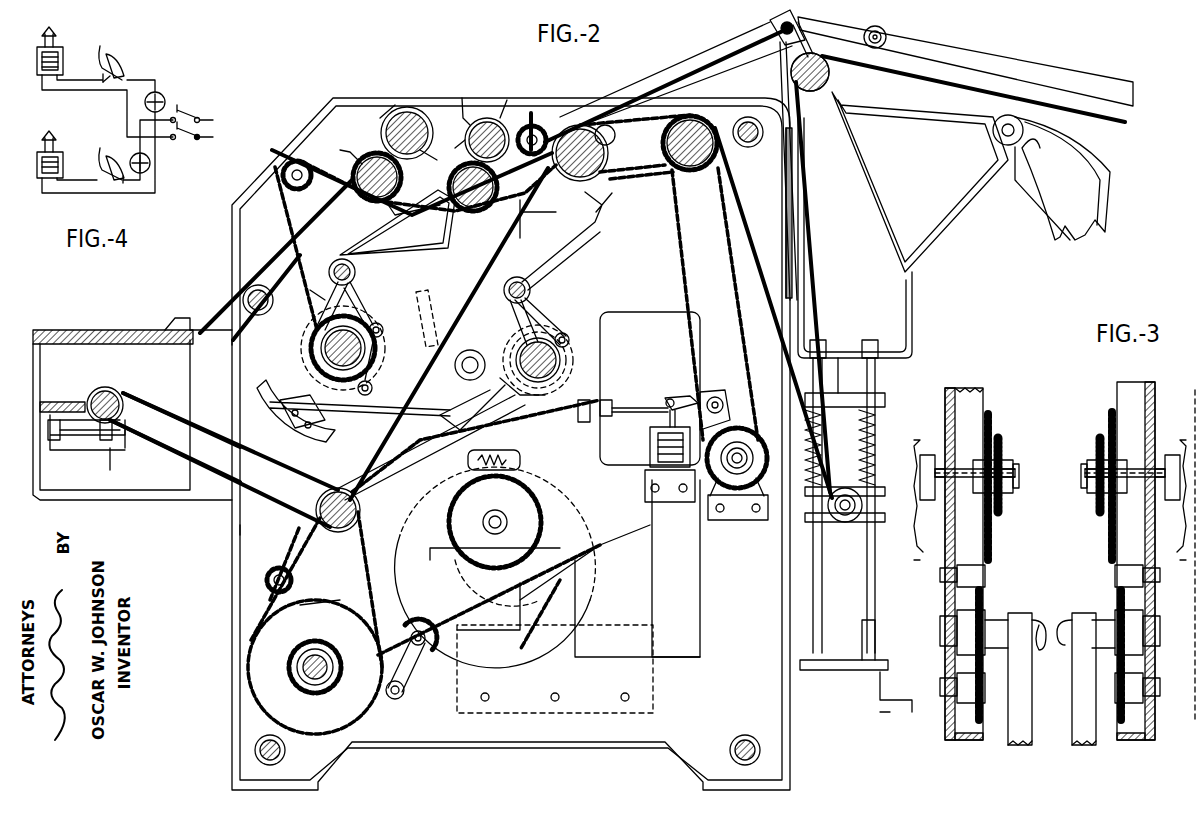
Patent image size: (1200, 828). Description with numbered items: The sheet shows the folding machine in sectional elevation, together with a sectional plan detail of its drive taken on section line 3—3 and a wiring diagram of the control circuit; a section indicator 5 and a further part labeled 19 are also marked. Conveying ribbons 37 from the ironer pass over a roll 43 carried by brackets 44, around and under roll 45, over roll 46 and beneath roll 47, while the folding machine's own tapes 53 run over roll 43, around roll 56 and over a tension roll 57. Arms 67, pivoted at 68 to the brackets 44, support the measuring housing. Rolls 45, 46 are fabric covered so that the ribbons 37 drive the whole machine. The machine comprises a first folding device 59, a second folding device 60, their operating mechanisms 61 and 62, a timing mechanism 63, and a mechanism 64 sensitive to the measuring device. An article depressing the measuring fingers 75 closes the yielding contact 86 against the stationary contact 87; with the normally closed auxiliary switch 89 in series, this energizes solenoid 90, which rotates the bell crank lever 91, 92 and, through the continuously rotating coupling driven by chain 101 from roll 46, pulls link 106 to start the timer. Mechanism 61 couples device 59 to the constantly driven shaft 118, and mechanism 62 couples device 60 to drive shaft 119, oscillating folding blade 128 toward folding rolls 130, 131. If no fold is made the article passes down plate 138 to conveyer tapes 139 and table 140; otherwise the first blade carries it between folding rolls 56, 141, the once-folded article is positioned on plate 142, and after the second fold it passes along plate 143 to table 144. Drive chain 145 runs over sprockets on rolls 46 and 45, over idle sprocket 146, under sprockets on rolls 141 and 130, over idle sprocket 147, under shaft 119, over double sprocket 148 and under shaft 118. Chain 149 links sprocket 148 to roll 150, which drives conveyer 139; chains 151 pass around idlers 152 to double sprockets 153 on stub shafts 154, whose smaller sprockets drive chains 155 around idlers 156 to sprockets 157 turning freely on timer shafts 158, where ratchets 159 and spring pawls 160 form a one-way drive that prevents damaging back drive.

In FIG. 2, the section line 3— 3 is at (210, 528).
In FIG. 2, the section line 5- 5 is at (201, 212).
In FIG. 2, the conveyor belt 19 is at (400, 228).
In FIG. 2, the endless conveying ribbons 37 is at (742, 230).
In FIG. 2, the roll 43 is at (811, 92).
In FIG. 2, the brackets 44 is at (972, 205).
In FIG. 2, the roll 45 is at (598, 172).
In FIG. 2, the roll 46 is at (718, 150).
In FIG. 2, the roll 47 is at (845, 522).
In FIG. 2, the endless tapes 53 is at (1040, 80).
In FIG. 2, the folding roll 56 is at (527, 125).
In FIG. 2, the tension roll 57 is at (885, 42).
In FIG. 2, the first folding device 59 is at (556, 306).
In FIG. 2, the second folding device 60 is at (376, 306).
In FIG. 2, the operating mechanism 61 is at (560, 372).
In FIG. 2, the operating mechanism 62 is at (366, 385).
In FIG. 2, the timing mechanism 63 is at (495, 567).
In FIG. 2, the timer initiating mechanism 64 is at (752, 470).
In FIG. 2, the arms 67 is at (1060, 210).
In FIG. 2, the pivot 68 is at (1000, 135).
In FIG. 4, the measuring fingers 75 is at (117, 58).
In FIG. 4, the yielding switch contact 86 is at (100, 50).
In FIG. 4, the stationary switch contact 87 is at (108, 83).
In FIG. 4, the auxiliary snap switch 89 is at (163, 98).
In FIG. 2, the solenoid 90 is at (671, 450).
In FIG. 4, the solenoid 90 is at (55, 63).
In FIG. 2, the bell crank lever 91 is at (690, 395).
In FIG. 2, the bell crank arm 92 is at (718, 397).
In FIG. 2, the chain 101 is at (686, 296).
In FIG. 2, the link 106 is at (612, 404).
In FIG. 2, the constantly driven shaft 118 is at (564, 336).
In FIG. 2, the drive shaft 119 is at (383, 330).
In FIG. 2, the folding plate 128 is at (447, 230).
In FIG. 2, the folding roll 130 is at (358, 168).
In FIG. 2, the folding roll 131 is at (406, 108).
In FIG. 2, the plate 138 is at (510, 228).
In FIG. 2, the conveyer tapes 139 is at (150, 400).
In FIG. 2, the table 140 is at (68, 400).
In FIG. 2, the folding roll 141 is at (468, 213).
In FIG. 2, the plate 142 is at (286, 300).
In FIG. 2, the plate 143 is at (272, 258).
In FIG. 2, the table 144 is at (100, 328).
In FIG. 2, the drive chain 145 is at (298, 243).
In FIG. 2, the idle sprocket 146 is at (540, 125).
In FIG. 2, the idle sprocket 147 is at (282, 172).
In FIG. 2, the double sprocket 148 is at (452, 328).
In FIG. 2, the chain 149 is at (345, 462).
In FIG. 2, the roll 150 is at (338, 532).
In FIG. 2, the chain 151 is at (303, 548).
In FIG. 3, the chain 151 is at (990, 680).
In FIG. 2, the idler 152 is at (274, 592).
In FIG. 2, the double sprockets 153 is at (355, 698).
In FIG. 2, the stub shafts 154 is at (308, 680).
In FIG. 2, the chains 155 is at (455, 615).
In FIG. 3, the chains 155 is at (992, 540).
In FIG. 2, the idlers 156 is at (424, 655).
In FIG. 2, the sprockets 157 is at (535, 600).
In FIG. 3, the sprockets 157 is at (993, 424).
In FIG. 2, the timer shafts 158 is at (483, 530).
In FIG. 3, the timer shafts 158 is at (1074, 478).
In FIG. 2, the ratchets 159 is at (488, 565).
In FIG. 3, the ratchets 159 is at (1004, 444).
In FIG. 2, the spring pawls 160 is at (470, 462).